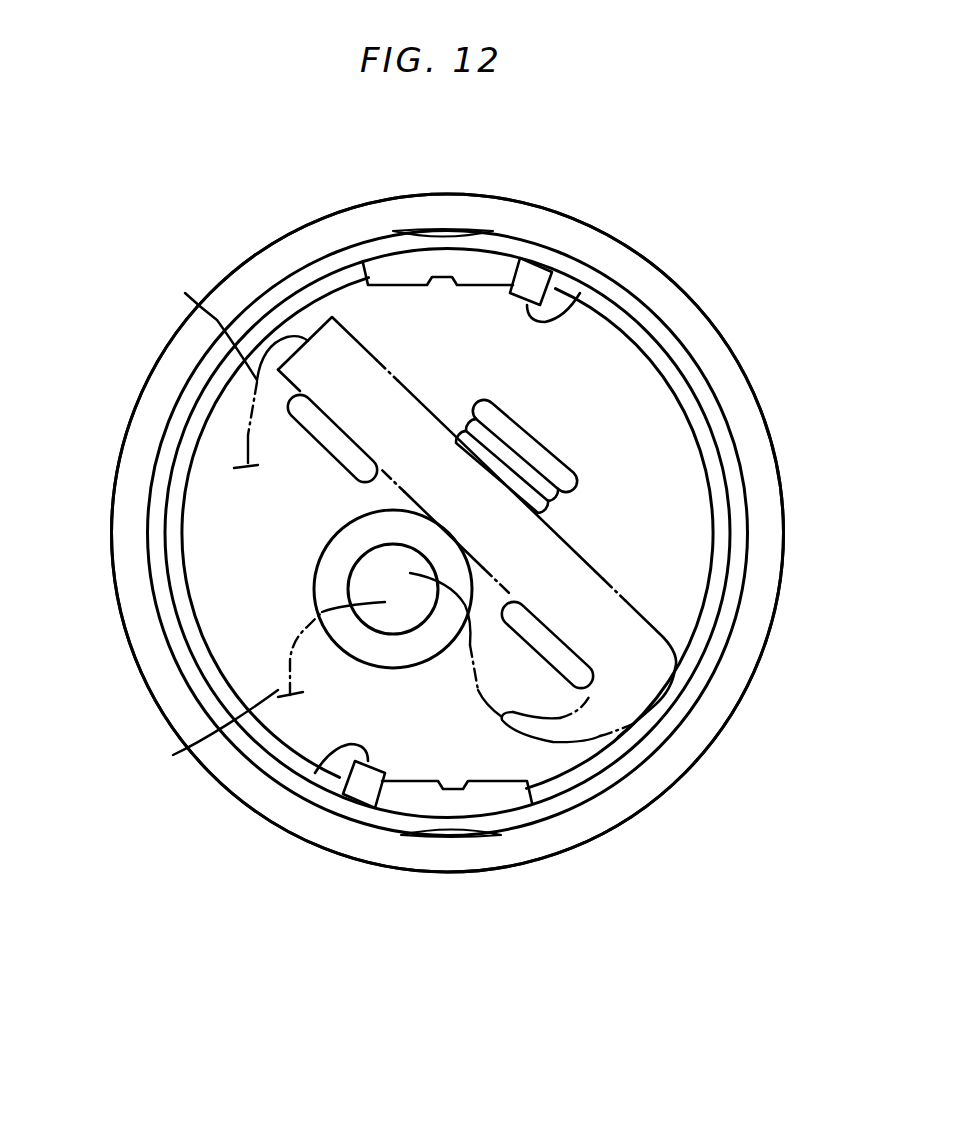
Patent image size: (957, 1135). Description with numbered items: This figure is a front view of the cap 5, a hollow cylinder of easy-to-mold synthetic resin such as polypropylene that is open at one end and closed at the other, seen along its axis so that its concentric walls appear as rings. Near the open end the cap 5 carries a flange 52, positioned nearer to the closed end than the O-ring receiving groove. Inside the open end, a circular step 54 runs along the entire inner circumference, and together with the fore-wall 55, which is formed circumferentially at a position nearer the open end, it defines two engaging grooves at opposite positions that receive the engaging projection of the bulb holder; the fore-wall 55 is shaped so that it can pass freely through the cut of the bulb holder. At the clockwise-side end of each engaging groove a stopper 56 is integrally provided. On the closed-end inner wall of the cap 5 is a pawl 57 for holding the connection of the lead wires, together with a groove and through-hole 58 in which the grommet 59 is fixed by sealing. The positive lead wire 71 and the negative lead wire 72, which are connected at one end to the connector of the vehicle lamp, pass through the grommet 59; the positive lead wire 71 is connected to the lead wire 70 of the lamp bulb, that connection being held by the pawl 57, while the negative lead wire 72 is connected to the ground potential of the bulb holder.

The cap 5 is at (230, 265).
The flange 52 is at (133, 410).
The circular step 54 is at (635, 337).
The fore-wall 55 is at (387, 263).
The stopper 56 is at (560, 303).
The pawl 57 is at (350, 433).
The groove and through-hole 58 is at (312, 585).
The grommet 59 is at (395, 622).
The lead wire 70 is at (185, 293).
The positive lead wire 71 is at (502, 717).
The negative lead wire 72 is at (173, 755).